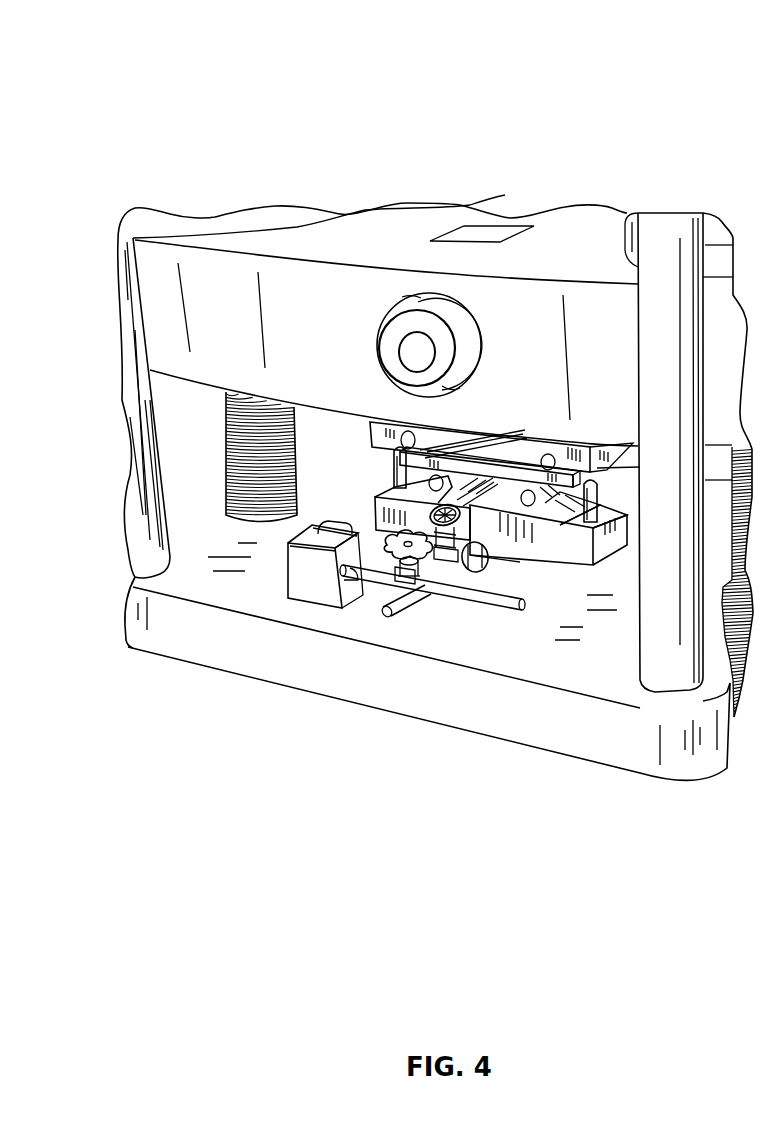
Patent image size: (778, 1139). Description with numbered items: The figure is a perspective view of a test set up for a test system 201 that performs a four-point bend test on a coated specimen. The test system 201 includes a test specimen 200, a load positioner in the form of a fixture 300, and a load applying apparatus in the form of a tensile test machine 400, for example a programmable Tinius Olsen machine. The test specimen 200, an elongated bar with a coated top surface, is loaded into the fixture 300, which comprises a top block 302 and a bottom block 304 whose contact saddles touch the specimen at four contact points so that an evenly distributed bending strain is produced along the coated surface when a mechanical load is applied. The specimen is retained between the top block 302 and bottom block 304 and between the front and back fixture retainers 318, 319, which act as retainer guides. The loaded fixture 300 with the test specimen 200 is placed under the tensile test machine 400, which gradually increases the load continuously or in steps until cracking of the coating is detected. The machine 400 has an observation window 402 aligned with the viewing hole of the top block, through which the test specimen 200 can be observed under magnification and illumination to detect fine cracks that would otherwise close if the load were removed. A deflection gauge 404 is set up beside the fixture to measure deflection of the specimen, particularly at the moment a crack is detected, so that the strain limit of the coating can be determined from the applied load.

The test system 201 is at (617, 70).
The tensile test machine 400 is at (148, 273).
The observation window 402 is at (492, 232).
The test specimen 200 is at (508, 458).
The fixture 300 is at (563, 446).
The top block 302 is at (598, 443).
The bottom block 304 is at (574, 557).
The front fixture retainer 318 is at (598, 494).
The back fixture retainer 319 is at (393, 450).
The deflection gauge 404 is at (460, 532).